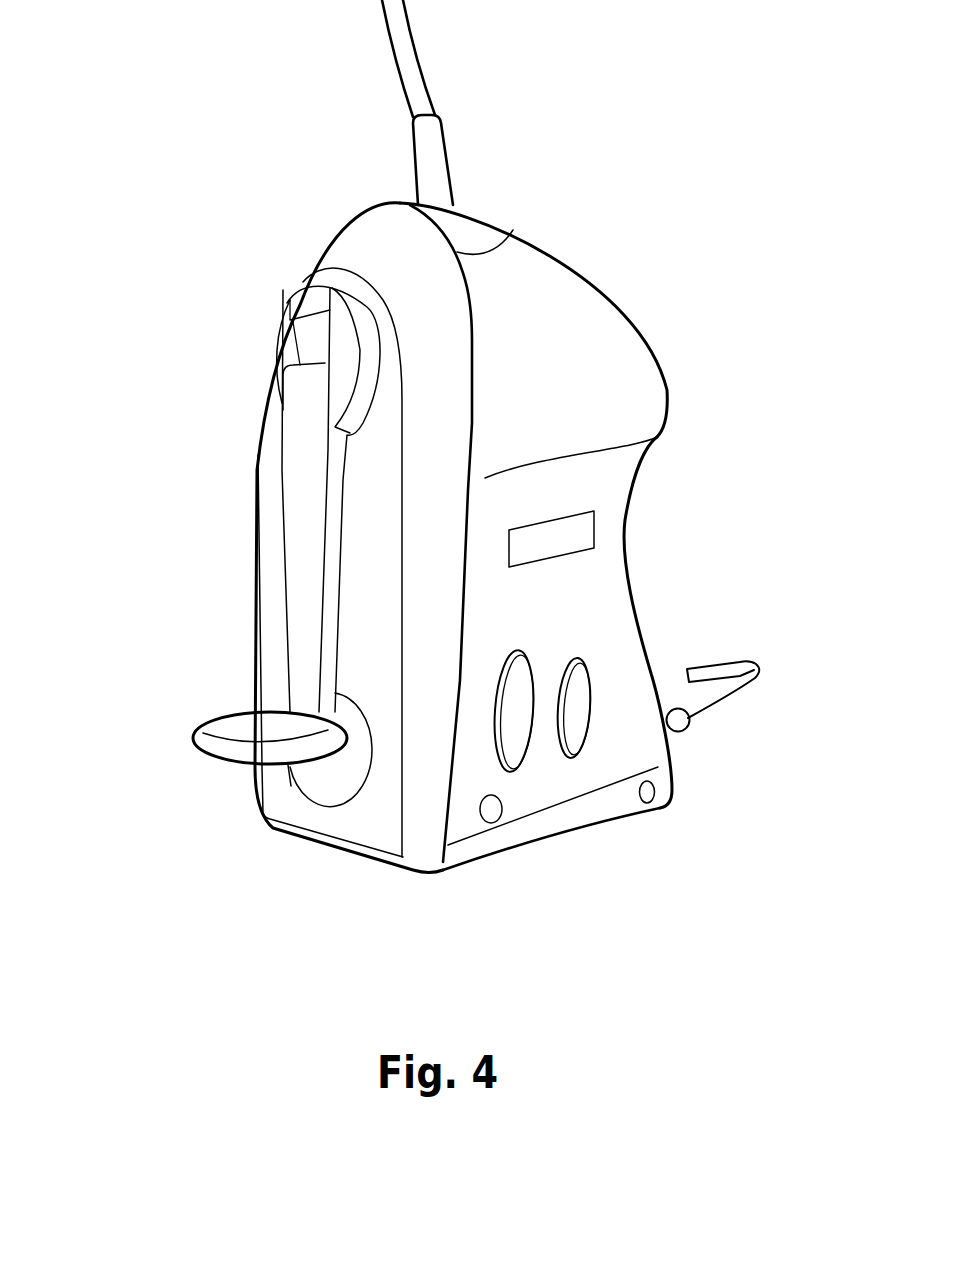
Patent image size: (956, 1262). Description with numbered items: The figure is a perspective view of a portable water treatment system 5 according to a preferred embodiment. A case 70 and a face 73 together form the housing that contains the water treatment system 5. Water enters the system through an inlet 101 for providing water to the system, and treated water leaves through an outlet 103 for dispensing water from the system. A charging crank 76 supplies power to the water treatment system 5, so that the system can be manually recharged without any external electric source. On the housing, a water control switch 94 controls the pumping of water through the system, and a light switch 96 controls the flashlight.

The water treatment system 5 is at (628, 183).
The case 70 is at (623, 352).
The face 73 is at (368, 248).
The charging crank 76 is at (302, 648).
The water control switch 94 is at (522, 740).
The light switch 96 is at (578, 725).
The inlet 101 is at (673, 732).
The outlet 103 is at (453, 182).